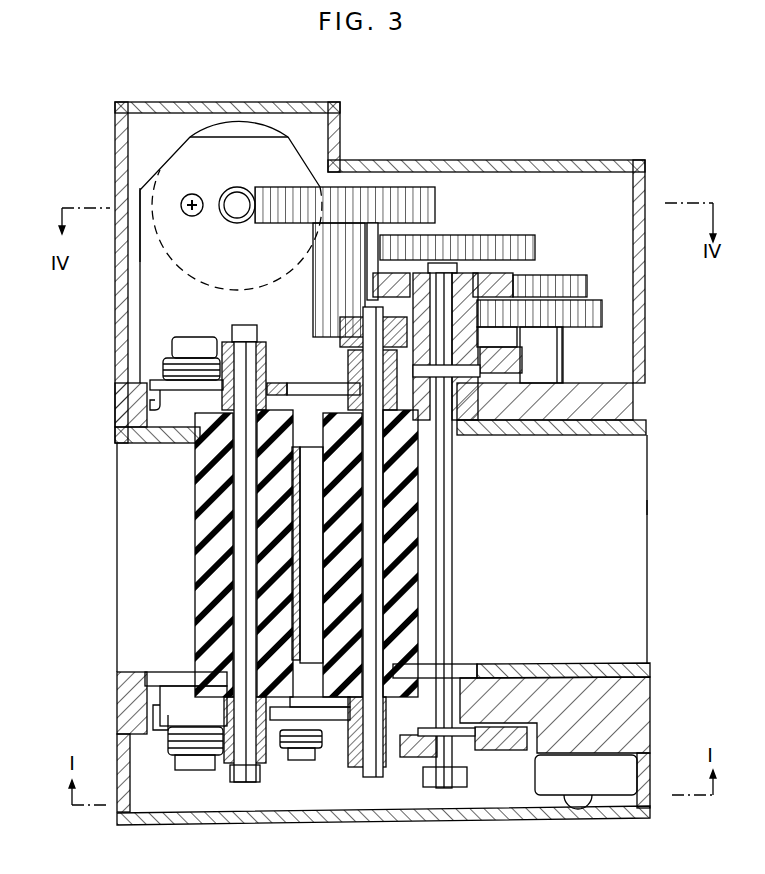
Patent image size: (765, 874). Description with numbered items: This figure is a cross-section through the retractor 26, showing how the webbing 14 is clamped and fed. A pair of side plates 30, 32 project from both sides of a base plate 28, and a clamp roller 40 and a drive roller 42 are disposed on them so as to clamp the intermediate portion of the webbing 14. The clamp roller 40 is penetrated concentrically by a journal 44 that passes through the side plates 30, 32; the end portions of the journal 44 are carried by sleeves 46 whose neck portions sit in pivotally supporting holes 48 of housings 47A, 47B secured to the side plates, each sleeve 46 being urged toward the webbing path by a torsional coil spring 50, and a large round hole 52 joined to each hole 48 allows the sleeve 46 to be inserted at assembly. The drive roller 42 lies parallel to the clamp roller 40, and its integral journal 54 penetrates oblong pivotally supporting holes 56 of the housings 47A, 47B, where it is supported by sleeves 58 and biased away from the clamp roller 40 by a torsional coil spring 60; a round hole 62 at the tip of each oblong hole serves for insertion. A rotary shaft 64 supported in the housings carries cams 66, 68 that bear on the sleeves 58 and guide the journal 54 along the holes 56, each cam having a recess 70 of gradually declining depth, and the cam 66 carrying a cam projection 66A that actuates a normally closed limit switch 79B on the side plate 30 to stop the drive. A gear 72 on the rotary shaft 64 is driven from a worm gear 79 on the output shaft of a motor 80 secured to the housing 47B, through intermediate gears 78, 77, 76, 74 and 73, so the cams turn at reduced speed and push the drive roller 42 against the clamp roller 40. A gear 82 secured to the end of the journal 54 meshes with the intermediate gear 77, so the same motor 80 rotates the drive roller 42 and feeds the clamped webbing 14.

The webbing 14 is at (298, 543).
The retractor 26 is at (108, 393).
The base plate 28 is at (650, 545).
The side plate 30 is at (543, 658).
The side plate 32 is at (512, 432).
The clamp roller 40 is at (221, 553).
The drive roller 42 is at (422, 590).
The journal 44 is at (243, 518).
The sleeve 46 is at (266, 365).
The housing 47A is at (623, 707).
The housing 47B is at (643, 323).
The pivotally supporting hole 48 is at (235, 398).
The torsional coil spring 50 is at (166, 347).
The round hole 52 is at (190, 718).
The journal 54 is at (410, 607).
The pivotally supporting hole 56 is at (330, 413).
The sleeve 58 is at (330, 372).
The torsional coil spring 60 is at (330, 753).
The round hole 62 is at (293, 397).
The rotary shaft 64 is at (447, 642).
The cam 66 is at (522, 363).
The cam projection 66A is at (417, 780).
The cam 68 is at (495, 752).
The recess 70 is at (327, 423).
The gear 72 is at (500, 276).
The intermediate gear 73 is at (588, 288).
The intermediate gear 74 is at (602, 318).
The intermediate gear 76 is at (517, 235).
The intermediate gear 77 is at (313, 303).
The intermediate gear 78 is at (437, 216).
The worm gear 79 is at (238, 187).
The limit switch 79B is at (580, 776).
The motor 80 is at (274, 124).
The gear 82 is at (338, 330).